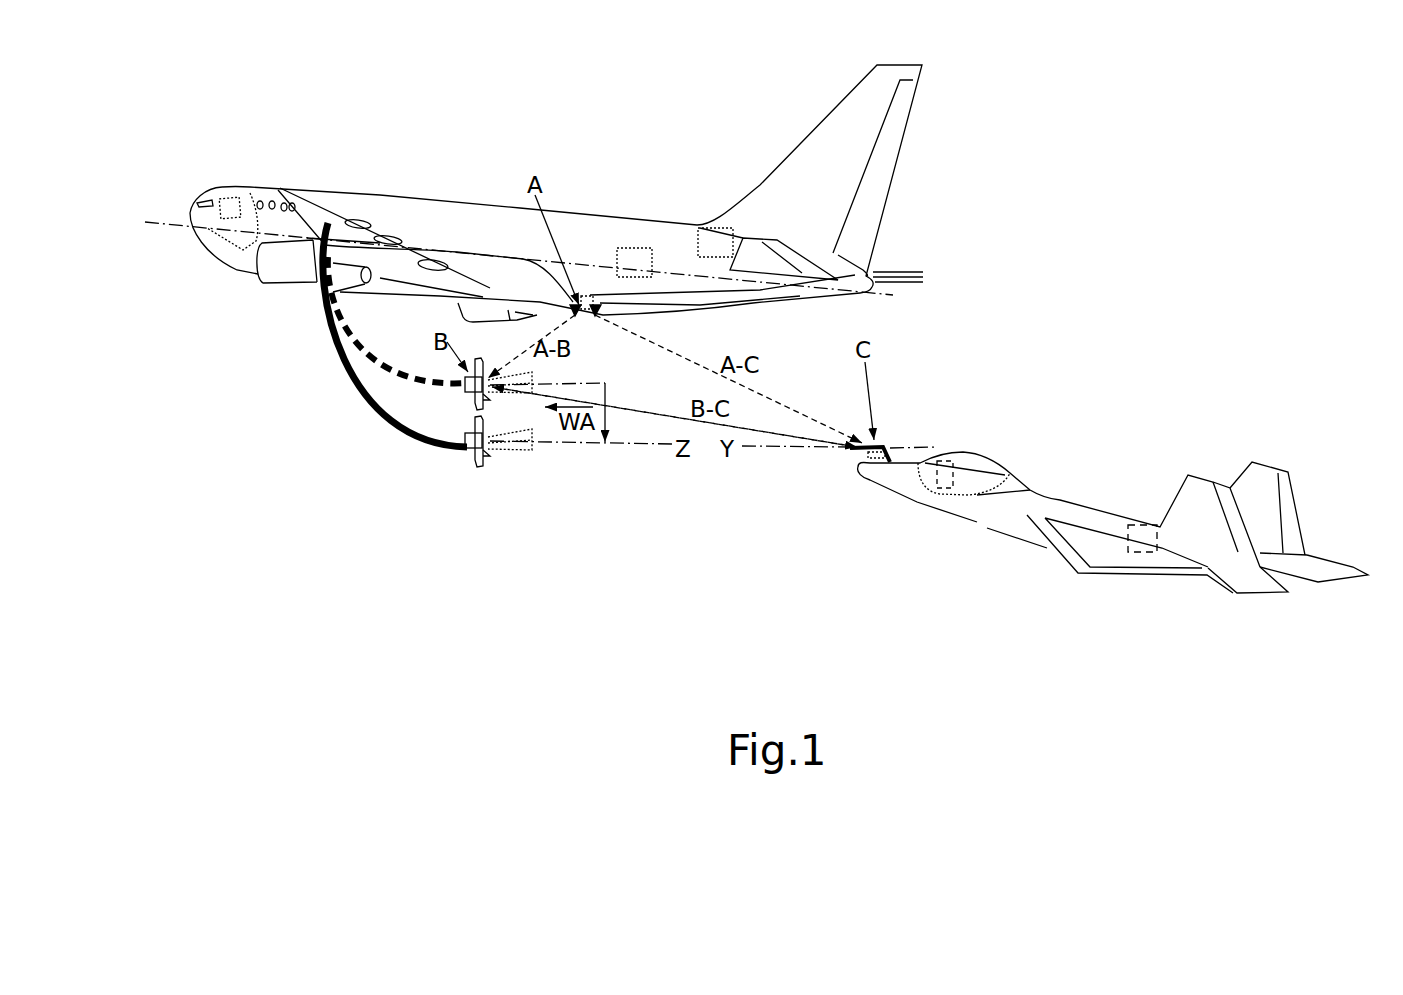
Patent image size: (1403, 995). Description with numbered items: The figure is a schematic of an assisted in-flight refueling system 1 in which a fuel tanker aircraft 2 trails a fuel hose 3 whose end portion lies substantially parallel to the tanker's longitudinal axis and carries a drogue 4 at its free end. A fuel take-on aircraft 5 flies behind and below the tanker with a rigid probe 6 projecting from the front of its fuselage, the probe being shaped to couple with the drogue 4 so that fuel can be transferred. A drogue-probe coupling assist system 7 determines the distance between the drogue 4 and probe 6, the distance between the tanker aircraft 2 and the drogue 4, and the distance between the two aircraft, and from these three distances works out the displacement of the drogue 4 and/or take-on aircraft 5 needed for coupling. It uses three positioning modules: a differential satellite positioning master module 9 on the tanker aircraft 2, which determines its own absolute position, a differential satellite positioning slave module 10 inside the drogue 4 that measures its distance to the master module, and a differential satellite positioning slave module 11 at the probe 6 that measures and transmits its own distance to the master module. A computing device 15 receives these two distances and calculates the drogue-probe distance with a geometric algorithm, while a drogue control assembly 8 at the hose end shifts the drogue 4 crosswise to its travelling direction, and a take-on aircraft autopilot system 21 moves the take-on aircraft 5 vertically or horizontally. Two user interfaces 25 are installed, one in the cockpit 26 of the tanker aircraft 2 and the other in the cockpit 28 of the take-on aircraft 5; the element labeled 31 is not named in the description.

The assisted in-flight refueling system 1 is at (307, 597).
The fuel tanker aircraft 2 is at (488, 203).
The fuel hose 3 is at (365, 350).
The drogue 4 is at (516, 455).
The fuel take-on aircraft 5 is at (1063, 500).
The rigid probe 6 is at (893, 455).
The drogue-probe coupling assist system 7 is at (789, 493).
The drogue control assembly 8 is at (488, 467).
The differential satellite positioning master module 9 is at (580, 296).
The differential satellite positioning slave module 10 is at (465, 447).
The differential satellite positioning slave module 11 is at (878, 445).
The computing device 15 is at (632, 248).
The take-on aircraft autopilot system 21 is at (1147, 524).
The user interface 25 is at (228, 197).
The cockpit 26 is at (250, 193).
The cockpit 28 is at (975, 485).
The tanker transmitter unit 31 is at (703, 227).